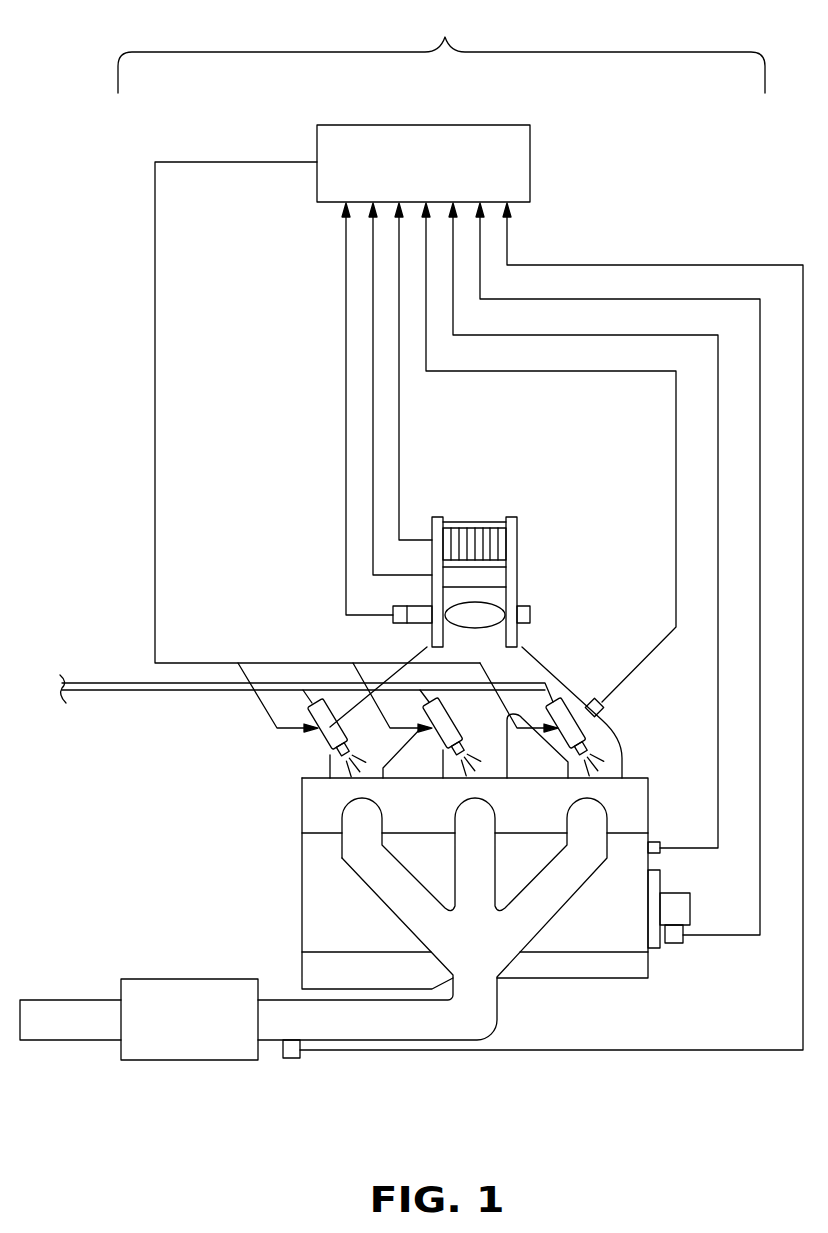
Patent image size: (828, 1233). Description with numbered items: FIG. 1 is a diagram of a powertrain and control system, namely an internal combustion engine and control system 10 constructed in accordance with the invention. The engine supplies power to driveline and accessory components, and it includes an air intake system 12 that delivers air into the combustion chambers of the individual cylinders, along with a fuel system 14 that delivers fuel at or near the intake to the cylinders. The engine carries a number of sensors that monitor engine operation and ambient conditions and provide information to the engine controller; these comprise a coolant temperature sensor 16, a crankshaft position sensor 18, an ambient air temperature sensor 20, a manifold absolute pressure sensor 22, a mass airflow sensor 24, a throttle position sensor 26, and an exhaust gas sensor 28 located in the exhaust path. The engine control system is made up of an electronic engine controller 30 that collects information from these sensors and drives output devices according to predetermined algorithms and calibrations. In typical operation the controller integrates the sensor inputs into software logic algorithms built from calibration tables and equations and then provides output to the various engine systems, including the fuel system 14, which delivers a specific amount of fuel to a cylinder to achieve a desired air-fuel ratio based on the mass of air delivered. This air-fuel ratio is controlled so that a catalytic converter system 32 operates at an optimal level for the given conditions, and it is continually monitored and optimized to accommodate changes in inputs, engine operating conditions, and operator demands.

The internal combustion engine and control system 10 is at (441, 49).
The air intake system 12 is at (547, 670).
The fuel system 14 is at (327, 740).
The coolant temperature sensor 16 is at (656, 854).
The crankshaft position sensor 18 is at (672, 943).
The ambient air temperature sensor 20 is at (510, 578).
The manifold absolute pressure sensor 22 is at (602, 716).
The mass airflow sensor 24 is at (497, 543).
The throttle position sensor 26 is at (402, 622).
The exhaust gas sensor 28 is at (293, 1060).
The electronic engine controller 30 is at (390, 125).
The catalytic converter system 32 is at (157, 1055).